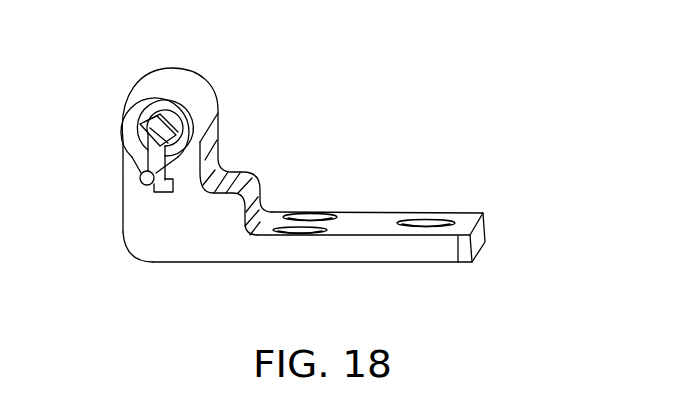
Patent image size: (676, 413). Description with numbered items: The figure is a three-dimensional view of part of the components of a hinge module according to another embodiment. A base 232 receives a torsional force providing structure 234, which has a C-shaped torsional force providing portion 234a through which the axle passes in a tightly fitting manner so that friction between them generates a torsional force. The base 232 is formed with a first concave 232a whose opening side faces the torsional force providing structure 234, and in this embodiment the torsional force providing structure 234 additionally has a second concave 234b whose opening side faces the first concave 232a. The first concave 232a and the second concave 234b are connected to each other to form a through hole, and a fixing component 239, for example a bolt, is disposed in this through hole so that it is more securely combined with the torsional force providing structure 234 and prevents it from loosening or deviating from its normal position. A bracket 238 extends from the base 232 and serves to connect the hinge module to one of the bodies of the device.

The base 232 is at (198, 82).
The first concave 232a is at (142, 176).
The torsional force providing structure 234 is at (140, 91).
The torsional force providing portion 234a is at (163, 113).
The second concave 234b is at (156, 174).
The bracket 238 is at (462, 218).
The fixing component 239 is at (141, 179).